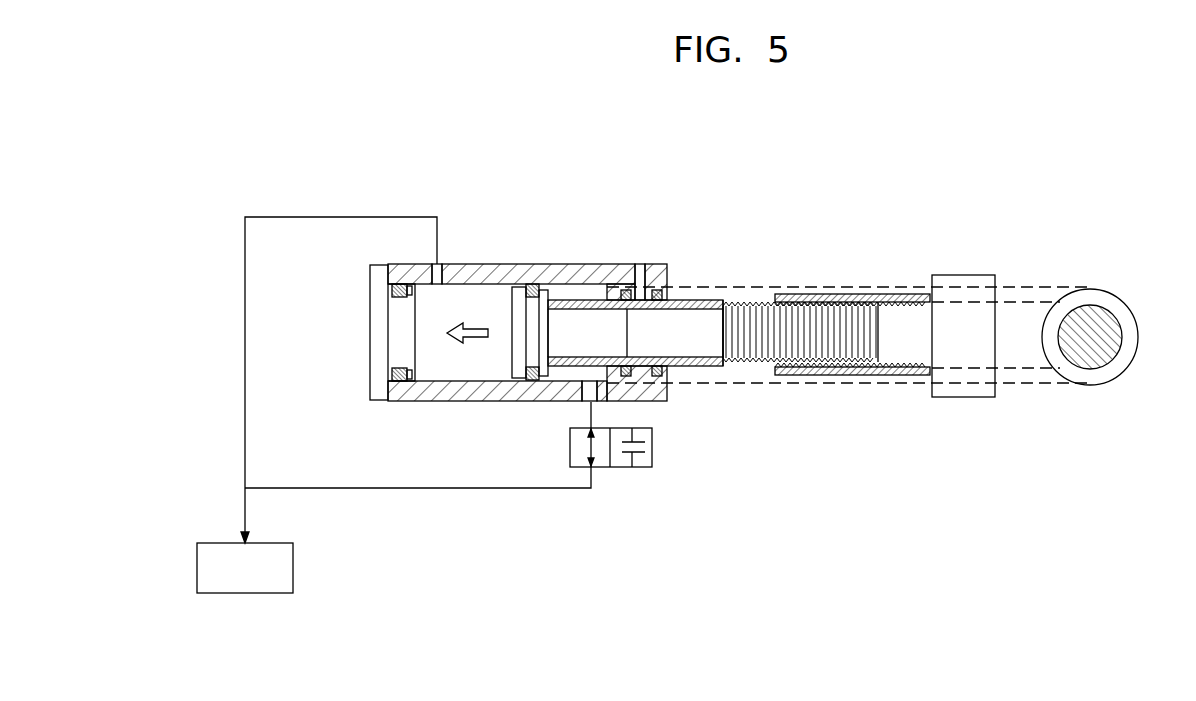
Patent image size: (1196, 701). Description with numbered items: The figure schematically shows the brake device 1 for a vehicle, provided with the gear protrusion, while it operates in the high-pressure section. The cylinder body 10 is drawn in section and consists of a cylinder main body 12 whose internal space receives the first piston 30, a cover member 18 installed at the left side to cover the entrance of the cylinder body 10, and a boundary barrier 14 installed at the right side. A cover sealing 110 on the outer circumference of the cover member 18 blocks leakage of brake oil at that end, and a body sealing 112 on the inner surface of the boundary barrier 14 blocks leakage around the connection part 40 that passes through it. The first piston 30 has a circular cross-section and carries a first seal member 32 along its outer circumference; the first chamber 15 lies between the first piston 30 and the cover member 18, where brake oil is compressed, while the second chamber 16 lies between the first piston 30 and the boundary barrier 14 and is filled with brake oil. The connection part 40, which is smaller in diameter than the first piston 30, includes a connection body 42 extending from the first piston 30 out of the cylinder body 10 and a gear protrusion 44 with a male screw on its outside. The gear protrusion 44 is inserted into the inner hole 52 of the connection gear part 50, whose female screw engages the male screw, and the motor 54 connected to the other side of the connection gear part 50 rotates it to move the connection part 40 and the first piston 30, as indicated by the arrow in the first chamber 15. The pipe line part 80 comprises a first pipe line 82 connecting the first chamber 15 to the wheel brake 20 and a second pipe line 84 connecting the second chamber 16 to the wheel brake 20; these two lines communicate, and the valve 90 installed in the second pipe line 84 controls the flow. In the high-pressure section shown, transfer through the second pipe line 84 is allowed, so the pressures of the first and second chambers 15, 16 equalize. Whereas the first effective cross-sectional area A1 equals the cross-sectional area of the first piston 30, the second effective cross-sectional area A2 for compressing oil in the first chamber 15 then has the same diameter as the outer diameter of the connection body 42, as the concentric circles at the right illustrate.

The brake device 1 is at (845, 163).
The cylinder body 10 is at (596, 262).
The cylinder main body 12 is at (510, 275).
The boundary barrier 14 is at (668, 402).
The first chamber 15 is at (462, 293).
The second chamber 16 is at (572, 292).
The cover member 18 is at (375, 303).
The wheel brake 20 is at (293, 560).
The first piston 30 is at (517, 358).
The first seal member 32 is at (530, 378).
The connection part 40 is at (692, 300).
The connection body 42 is at (719, 300).
The gear protrusion 44 is at (757, 300).
The connection gear part 50 is at (896, 385).
The inner hole 52 is at (902, 337).
The motor 54 is at (975, 275).
The pipe line part 80 is at (466, 514).
The first pipe line 82 is at (245, 322).
The second pipe line 84 is at (545, 490).
The valve 90 is at (657, 461).
The cover sealing 110 is at (397, 285).
The body sealing 112 is at (655, 290).
The first effective cross-sectional area A1 is at (1110, 290).
The second effective cross-sectional area A2 is at (1105, 325).